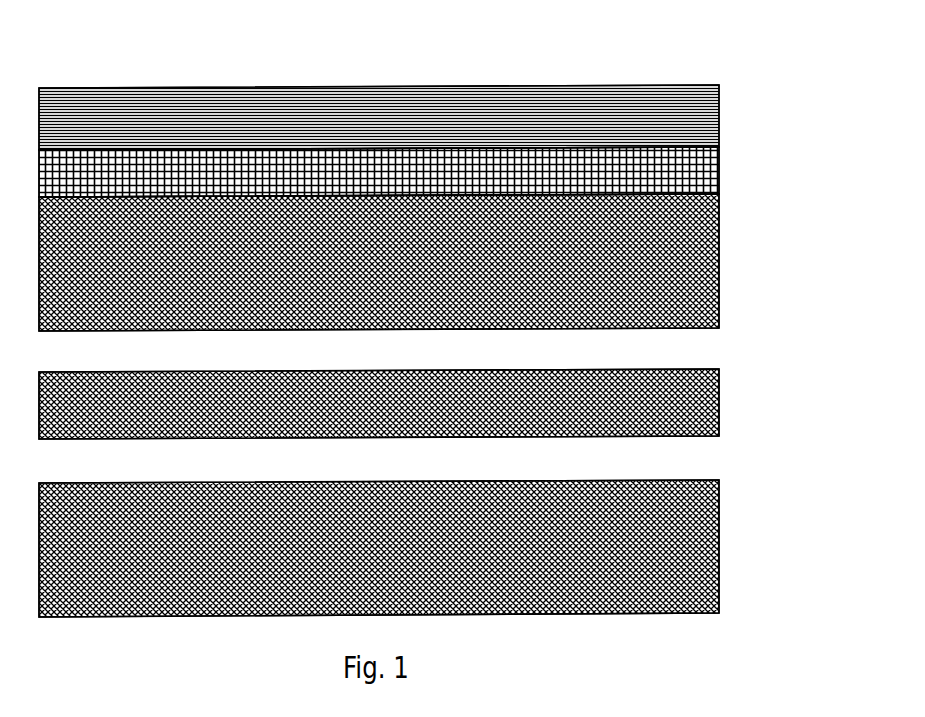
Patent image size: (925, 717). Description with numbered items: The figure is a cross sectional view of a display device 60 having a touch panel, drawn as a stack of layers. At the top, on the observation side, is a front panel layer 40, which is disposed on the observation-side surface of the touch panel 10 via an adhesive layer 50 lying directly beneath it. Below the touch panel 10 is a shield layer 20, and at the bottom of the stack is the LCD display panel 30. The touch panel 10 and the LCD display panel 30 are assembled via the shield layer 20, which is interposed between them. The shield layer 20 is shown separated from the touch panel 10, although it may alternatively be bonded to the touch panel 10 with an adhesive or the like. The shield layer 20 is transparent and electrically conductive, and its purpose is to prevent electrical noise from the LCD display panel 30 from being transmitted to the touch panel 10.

The display device 60 is at (66, 41).
The front panel layer 40 is at (719, 107).
The adhesive layer 50 is at (719, 164).
The touch panel 10 is at (719, 262).
The shield layer 20 is at (719, 399).
The LCD display panel 30 is at (719, 534).